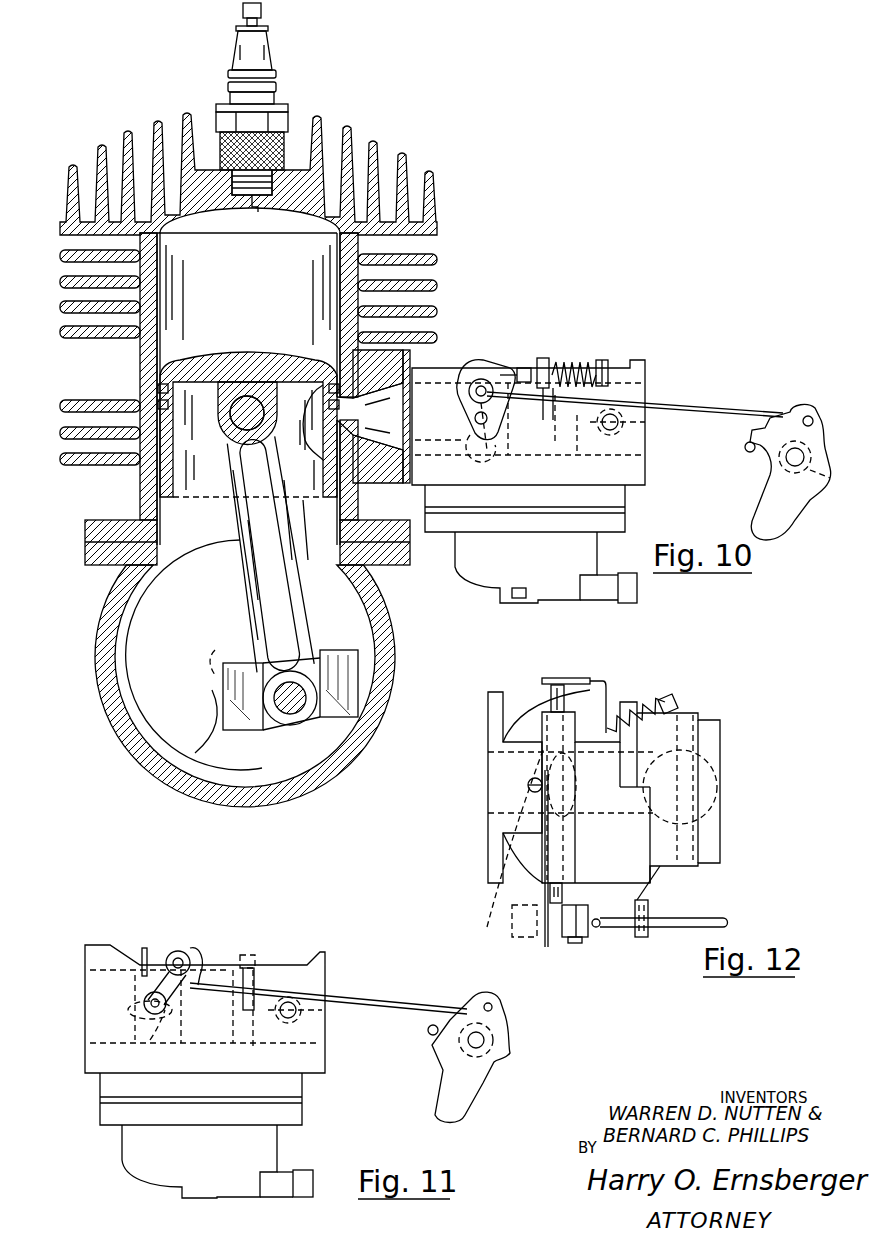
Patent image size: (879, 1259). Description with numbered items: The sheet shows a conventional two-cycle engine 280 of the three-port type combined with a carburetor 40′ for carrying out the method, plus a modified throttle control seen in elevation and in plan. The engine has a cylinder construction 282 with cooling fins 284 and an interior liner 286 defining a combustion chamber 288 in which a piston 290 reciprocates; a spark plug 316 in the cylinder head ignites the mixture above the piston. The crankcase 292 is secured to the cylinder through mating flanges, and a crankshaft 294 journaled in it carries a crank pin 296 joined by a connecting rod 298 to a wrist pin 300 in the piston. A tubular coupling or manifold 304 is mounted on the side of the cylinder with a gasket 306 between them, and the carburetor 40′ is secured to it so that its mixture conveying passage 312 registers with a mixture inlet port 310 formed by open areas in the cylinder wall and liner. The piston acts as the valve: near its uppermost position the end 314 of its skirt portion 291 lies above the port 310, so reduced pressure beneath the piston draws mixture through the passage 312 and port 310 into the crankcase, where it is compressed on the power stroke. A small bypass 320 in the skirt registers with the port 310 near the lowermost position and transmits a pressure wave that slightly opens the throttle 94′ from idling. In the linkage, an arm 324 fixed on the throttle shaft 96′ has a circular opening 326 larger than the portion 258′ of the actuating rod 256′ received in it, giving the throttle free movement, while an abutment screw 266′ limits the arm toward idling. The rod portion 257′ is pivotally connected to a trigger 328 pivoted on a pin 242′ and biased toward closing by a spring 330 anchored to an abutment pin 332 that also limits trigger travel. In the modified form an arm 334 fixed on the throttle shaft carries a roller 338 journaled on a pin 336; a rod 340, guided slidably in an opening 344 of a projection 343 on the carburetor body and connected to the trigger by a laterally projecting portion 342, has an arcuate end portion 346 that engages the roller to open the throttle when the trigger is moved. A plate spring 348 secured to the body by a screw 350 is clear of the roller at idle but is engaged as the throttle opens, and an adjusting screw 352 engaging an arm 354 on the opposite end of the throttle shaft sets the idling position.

In FIG. 10, the two cycle engine 280 is at (440, 197).
In FIG. 10, the cylinder construction 282 is at (352, 262).
In FIG. 10, the cooling fins 284 is at (432, 260).
In FIG. 10, the interior liner 286 is at (334, 268).
In FIG. 10, the combustion chamber 288 is at (259, 274).
In FIG. 10, the spark plug 316 is at (283, 143).
In FIG. 10, the tubular coupling or manifold 304 is at (402, 348).
In FIG. 10, the gasket 306 is at (407, 362).
In FIG. 10, the mixture conveying passage 312 is at (382, 410).
In FIG. 10, the piston 290 is at (205, 366).
In FIG. 10, the skirt portion 291 is at (305, 392).
In FIG. 10, the wrist pin 300 is at (247, 405).
In FIG. 10, the bypass or restricted passage 320 is at (317, 452).
In FIG. 10, the connecting rod 298 is at (310, 620).
In FIG. 10, the crank pin 296 is at (290, 706).
In FIG. 10, the crankshaft 294 is at (202, 718).
In FIG. 10, the crankcase 292 is at (393, 668).
In FIG. 10, the terminal or end of skirt portion 314 is at (380, 568).
In FIG. 10, the carburetor 40′ is at (645, 360).
In FIG. 10, the portion of link 258′ is at (456, 372).
In FIG. 10, the throttle supporting shaft 96′ is at (500, 395).
In FIG. 10, the mixture inlet port 310 is at (502, 393).
In FIG. 10, the throttle valve 94′ is at (472, 445).
In FIG. 10, the circular opening 326 is at (522, 366).
In FIG. 10, the arm or member 324 is at (536, 360).
In FIG. 10, the abutment screw 266′ is at (556, 362).
In FIG. 10, the throttle actuating rod or link 256′ is at (708, 393).
In FIG. 10, the portion of rod 257′ is at (808, 416).
In FIG. 10, the throttle operating trigger 328 is at (787, 510).
In FIG. 10, the pin 242′ is at (773, 428).
In FIG. 10, the abutment pin 332 is at (745, 447).
In FIG. 10, the spring 330 is at (760, 472).
In FIG. 12, the arm 354 is at (593, 682).
In FIG. 12, the adjusting screw 352 is at (617, 713).
In FIG. 12, the screw 350 is at (530, 782).
In FIG. 12, the plate spring 348 is at (547, 943).
In FIG. 11, the plate spring 348 is at (141, 953).
In FIG. 12, the arm or member 334 is at (584, 905).
In FIG. 11, the arm or member 334 is at (150, 992).
In FIG. 12, the roller or anti-friction member 338 is at (588, 928).
In FIG. 11, the roller or anti-friction member 338 is at (177, 952).
In FIG. 12, the pin 336 is at (590, 935).
In FIG. 11, the pin 336 is at (185, 957).
In FIG. 12, the arcuately shaped portion 346 is at (601, 924).
In FIG. 11, the arcuately shaped portion 346 is at (192, 947).
In FIG. 12, the rod or member 340 is at (726, 920).
In FIG. 11, the rod or member 340 is at (377, 992).
In FIG. 12, the projection 343 is at (650, 907).
In FIG. 11, the projection 343 is at (248, 968).
In FIG. 12, the opening 344 is at (653, 912).
In FIG. 11, the opening 344 is at (244, 957).
In FIG. 11, the laterally projecting portion 342 is at (487, 1002).